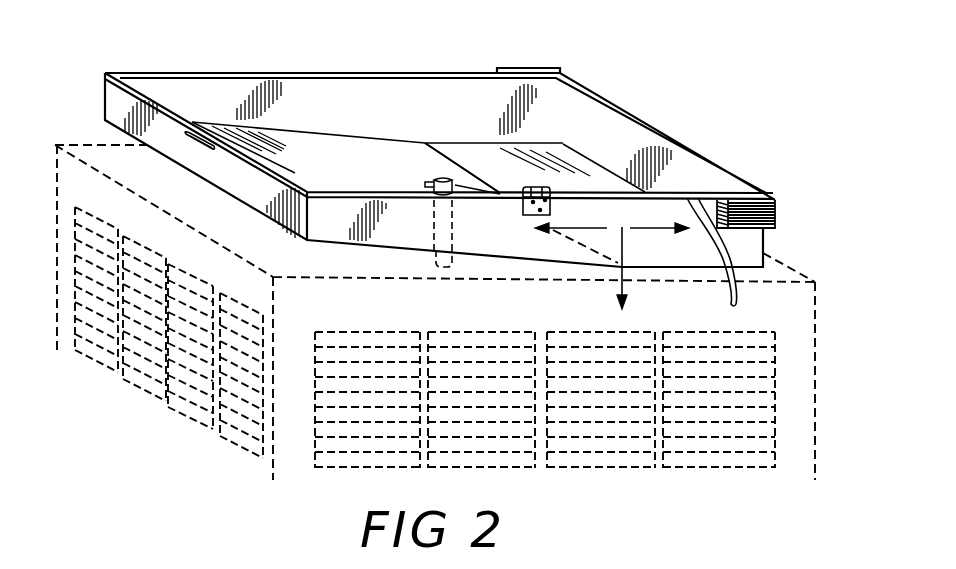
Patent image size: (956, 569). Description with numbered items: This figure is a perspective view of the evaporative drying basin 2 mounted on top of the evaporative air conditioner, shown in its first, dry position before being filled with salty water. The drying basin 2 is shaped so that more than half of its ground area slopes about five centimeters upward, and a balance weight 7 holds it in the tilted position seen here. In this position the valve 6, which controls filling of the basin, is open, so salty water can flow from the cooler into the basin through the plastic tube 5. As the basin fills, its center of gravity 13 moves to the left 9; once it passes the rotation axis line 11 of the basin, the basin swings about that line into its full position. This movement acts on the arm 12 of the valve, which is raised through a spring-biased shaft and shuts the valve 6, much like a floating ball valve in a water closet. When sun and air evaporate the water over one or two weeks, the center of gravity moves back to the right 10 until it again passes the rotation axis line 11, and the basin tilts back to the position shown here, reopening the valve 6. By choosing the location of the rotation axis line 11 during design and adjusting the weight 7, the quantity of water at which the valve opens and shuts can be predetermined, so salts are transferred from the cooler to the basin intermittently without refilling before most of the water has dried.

The drying basin 2 is at (230, 97).
The tube 5 is at (733, 283).
The valve 6 is at (540, 187).
The balance weight 7 is at (533, 67).
The leftward movement of the center of gravity 9 is at (561, 232).
The rightward movement of the center of gravity 10 is at (659, 241).
The rotation axis line 11 is at (463, 170).
The arm 12 is at (447, 177).
The center of gravity of the basin 13 is at (636, 271).